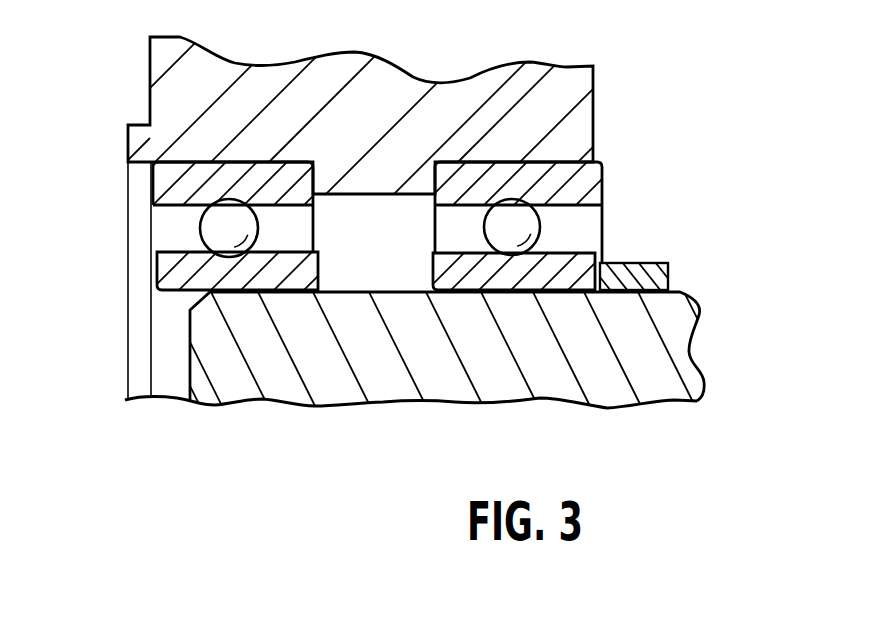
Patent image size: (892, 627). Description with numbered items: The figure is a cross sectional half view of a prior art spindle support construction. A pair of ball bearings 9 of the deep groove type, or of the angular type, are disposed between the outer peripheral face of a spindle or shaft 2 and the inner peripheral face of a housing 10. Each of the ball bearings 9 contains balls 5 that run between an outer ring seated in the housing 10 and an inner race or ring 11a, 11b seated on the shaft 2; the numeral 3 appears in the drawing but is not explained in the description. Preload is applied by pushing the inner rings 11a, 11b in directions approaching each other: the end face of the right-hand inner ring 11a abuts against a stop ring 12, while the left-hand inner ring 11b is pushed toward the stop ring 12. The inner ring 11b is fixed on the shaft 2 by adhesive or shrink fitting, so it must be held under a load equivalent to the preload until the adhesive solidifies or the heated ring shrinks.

The spindle or shaft 2 is at (697, 347).
The balls 3 is at (519, 212).
The balls 5 is at (229, 200).
The ball bearings 9 is at (105, 217).
The housing 10 is at (170, 96).
The inner race or ring 11a is at (567, 253).
The inner race or ring 11b is at (157, 277).
The stop ring 12 is at (668, 272).